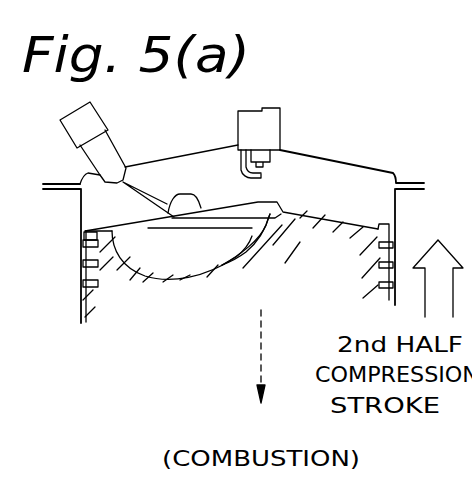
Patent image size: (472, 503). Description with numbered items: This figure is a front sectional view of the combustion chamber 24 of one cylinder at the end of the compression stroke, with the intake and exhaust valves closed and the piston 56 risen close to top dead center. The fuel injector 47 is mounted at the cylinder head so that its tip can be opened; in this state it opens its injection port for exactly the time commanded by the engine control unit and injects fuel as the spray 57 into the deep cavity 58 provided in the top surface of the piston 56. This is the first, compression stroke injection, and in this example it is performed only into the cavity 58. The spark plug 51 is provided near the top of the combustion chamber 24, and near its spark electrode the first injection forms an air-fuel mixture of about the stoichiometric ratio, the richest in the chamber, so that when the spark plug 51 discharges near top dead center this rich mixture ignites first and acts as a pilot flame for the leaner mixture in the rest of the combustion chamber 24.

The combustion chamber 24 is at (372, 176).
The fuel injector 47 is at (108, 115).
The spark plug 51 is at (272, 125).
The piston 56 is at (280, 244).
The spray 57 is at (194, 197).
The deep cavity 58 is at (190, 267).